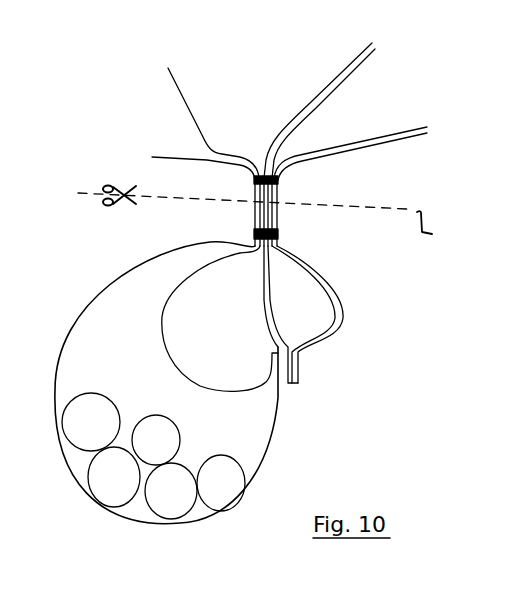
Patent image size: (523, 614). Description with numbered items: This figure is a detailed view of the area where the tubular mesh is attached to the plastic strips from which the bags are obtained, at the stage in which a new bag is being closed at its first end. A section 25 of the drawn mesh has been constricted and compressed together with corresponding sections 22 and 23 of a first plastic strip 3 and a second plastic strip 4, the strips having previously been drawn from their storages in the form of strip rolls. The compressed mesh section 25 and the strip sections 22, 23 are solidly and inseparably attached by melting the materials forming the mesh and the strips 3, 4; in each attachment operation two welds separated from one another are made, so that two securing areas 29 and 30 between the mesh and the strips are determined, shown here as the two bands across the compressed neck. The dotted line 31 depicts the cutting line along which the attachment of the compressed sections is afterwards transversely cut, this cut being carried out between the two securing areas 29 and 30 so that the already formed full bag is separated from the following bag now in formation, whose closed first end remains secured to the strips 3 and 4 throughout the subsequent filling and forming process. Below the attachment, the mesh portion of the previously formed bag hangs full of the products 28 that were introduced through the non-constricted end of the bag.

The first plastic strip 3 is at (360, 54).
The second plastic strip 4 is at (413, 137).
The section of first strip 22 is at (255, 192).
The section of second strip 23 is at (279, 212).
The section of mesh 25 is at (252, 218).
The products 28 is at (112, 490).
The securing area 29 is at (279, 178).
The securing area 30 is at (279, 234).
The cutting line 31 is at (441, 229).